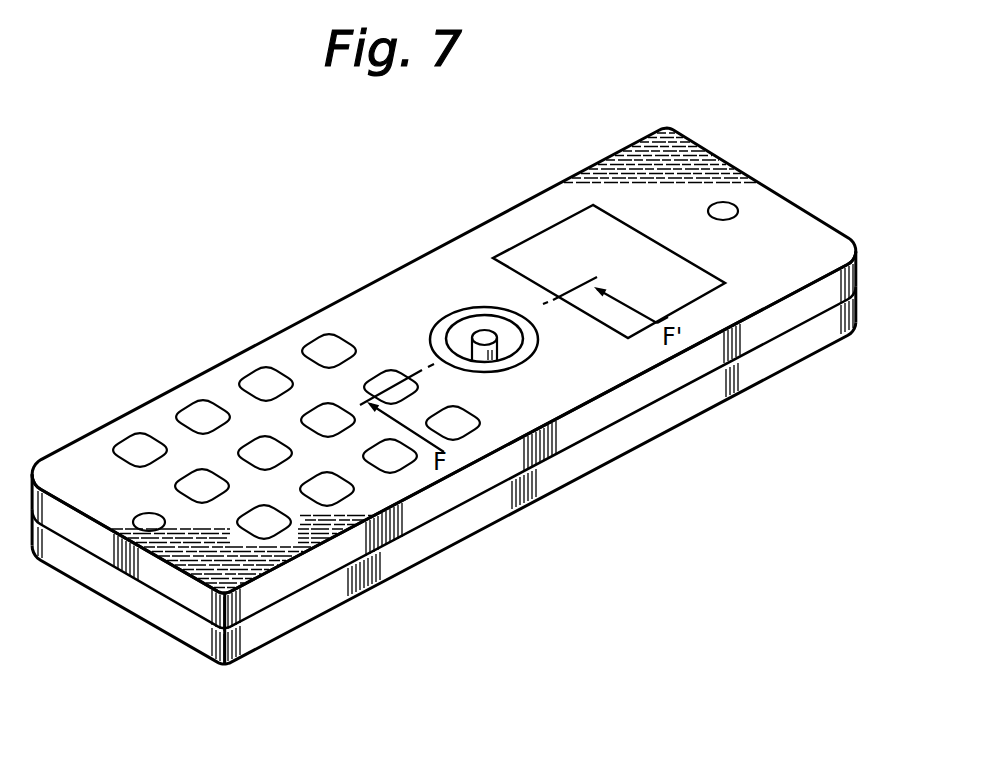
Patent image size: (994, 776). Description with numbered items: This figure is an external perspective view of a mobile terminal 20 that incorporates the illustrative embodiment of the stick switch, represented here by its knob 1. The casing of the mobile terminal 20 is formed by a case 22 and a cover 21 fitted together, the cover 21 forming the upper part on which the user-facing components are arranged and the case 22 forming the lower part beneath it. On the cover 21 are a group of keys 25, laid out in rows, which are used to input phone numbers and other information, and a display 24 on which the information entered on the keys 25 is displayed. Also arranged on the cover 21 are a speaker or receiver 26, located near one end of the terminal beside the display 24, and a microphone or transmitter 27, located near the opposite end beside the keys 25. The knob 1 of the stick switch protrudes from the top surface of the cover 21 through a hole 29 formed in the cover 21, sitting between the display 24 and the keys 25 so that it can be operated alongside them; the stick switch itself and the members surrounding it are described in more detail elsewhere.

The knob 1 is at (470, 340).
The mobile terminal 20 is at (588, 160).
The cover 21 is at (854, 262).
The case 22 is at (789, 351).
The display 24 is at (530, 260).
The keys 25 is at (267, 527).
The speaker 26 is at (713, 202).
The microphone 27 is at (140, 513).
The hole 29 is at (473, 328).